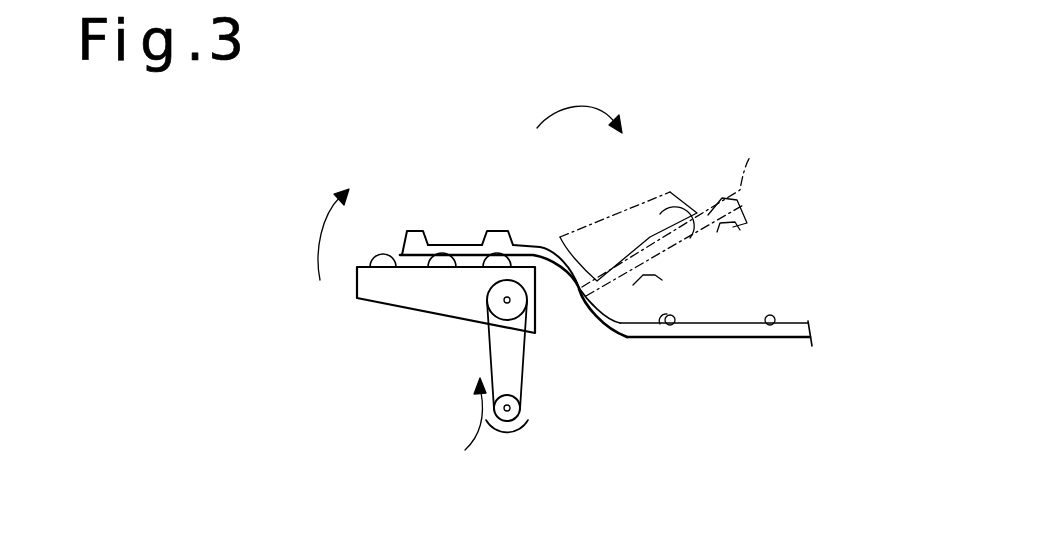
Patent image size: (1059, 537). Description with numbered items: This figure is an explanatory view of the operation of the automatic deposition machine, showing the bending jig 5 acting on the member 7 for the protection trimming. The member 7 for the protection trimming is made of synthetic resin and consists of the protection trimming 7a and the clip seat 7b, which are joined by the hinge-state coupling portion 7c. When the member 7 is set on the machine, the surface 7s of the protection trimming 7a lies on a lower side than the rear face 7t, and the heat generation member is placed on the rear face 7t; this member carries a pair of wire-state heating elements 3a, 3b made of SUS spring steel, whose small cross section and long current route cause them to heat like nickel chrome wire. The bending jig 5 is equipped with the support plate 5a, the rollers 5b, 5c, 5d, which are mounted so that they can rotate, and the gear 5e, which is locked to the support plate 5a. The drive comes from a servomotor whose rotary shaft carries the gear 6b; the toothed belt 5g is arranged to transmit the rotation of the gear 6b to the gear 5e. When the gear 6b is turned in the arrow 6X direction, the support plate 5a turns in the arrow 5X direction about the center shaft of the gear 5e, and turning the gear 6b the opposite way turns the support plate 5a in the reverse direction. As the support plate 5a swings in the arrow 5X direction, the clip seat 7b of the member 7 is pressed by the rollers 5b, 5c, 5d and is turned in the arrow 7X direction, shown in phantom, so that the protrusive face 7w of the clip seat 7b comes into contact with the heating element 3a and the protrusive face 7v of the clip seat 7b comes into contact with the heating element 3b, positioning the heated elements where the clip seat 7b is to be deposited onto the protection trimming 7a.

The heating element 3a is at (650, 326).
The heating element 3b is at (778, 317).
The bending jig 5 is at (400, 308).
The support plate 5a is at (393, 288).
The roller 5b is at (382, 250).
The roller 5c is at (443, 257).
The roller 5d is at (493, 268).
The gear 5e is at (492, 305).
The toothed belt 5g is at (520, 375).
The arrow 5x direction 5X is at (317, 237).
The gear 6b is at (507, 411).
The arrow 6x direction 6X is at (457, 428).
The member for the protection trimming 7 is at (742, 338).
The protection trimming 7a is at (695, 339).
The clip seat 7b is at (750, 157).
The hinge-state coupling portion 7c is at (565, 288).
The surface of the protection trimming 7s is at (790, 343).
The rear face of the protection trimming 7t is at (740, 322).
The protrusive face of the clip seat 7v is at (402, 240).
The protrusive face of the clip seat 7w is at (494, 231).
The arrow 7x direction 7X is at (579, 90).